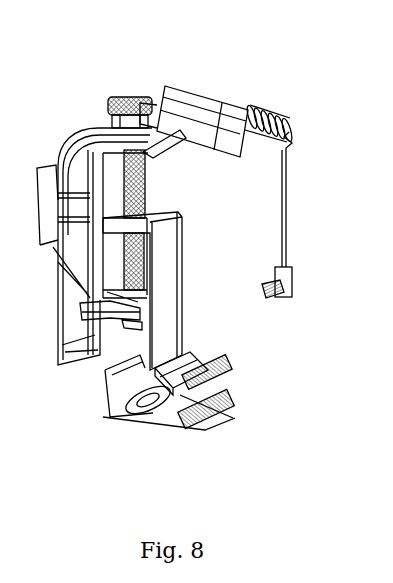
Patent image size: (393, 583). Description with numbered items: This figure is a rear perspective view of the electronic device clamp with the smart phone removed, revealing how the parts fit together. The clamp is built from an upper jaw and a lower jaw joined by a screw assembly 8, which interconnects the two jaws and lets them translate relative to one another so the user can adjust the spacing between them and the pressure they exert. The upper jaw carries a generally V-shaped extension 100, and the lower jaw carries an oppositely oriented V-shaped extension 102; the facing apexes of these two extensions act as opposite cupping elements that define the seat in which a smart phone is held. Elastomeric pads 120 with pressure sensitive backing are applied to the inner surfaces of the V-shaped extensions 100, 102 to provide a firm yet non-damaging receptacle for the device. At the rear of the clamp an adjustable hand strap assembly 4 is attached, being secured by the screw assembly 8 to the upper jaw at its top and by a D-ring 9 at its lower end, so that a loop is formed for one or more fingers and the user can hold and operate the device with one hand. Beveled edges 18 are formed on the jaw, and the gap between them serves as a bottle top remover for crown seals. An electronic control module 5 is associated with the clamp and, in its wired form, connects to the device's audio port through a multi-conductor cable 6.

The adjustable hand strap assembly 4 is at (65, 140).
The electronic control module 5 is at (218, 92).
The conductor cable 6 is at (263, 112).
The screw assembly 8 is at (132, 93).
The D-ring 9 is at (78, 310).
The beveled edges 18 is at (208, 437).
The V-shaped extension 100 is at (187, 157).
The V-shaped extension 102 is at (200, 360).
The elastomeric pads 120 is at (183, 377).